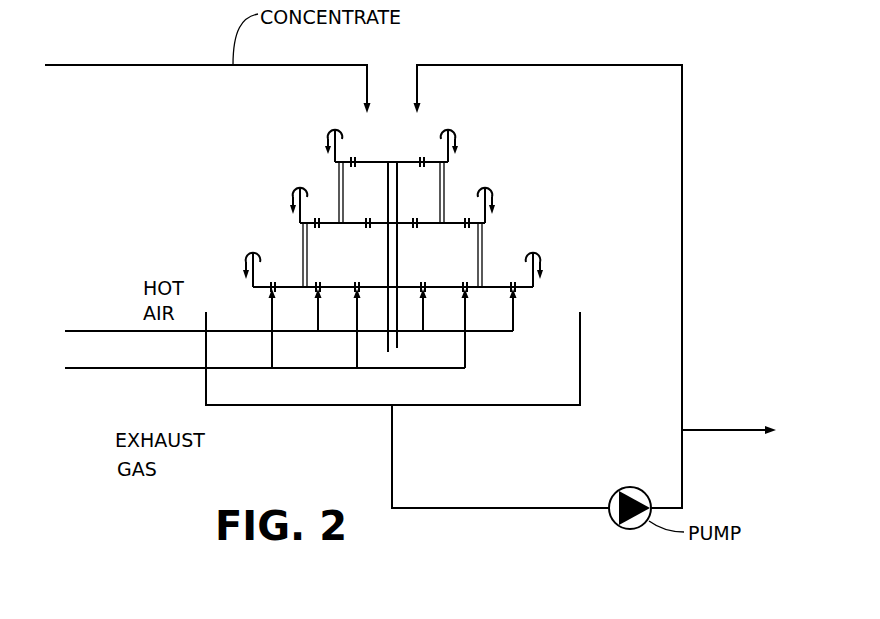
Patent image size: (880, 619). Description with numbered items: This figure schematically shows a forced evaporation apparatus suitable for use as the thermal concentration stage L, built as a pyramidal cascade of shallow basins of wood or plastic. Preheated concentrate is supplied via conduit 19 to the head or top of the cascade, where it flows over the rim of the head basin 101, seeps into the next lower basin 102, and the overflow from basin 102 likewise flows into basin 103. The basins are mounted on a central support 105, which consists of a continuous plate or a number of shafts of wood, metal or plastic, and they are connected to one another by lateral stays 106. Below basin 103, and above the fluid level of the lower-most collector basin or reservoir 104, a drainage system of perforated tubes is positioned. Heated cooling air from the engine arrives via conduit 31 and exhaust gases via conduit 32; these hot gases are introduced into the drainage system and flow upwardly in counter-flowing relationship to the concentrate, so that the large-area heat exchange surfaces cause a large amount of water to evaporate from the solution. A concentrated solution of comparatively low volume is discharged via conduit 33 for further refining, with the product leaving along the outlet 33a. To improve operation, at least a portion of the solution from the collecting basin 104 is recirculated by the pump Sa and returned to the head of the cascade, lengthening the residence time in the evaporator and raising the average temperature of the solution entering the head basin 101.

The conduit 19 is at (203, 65).
The discharge conduit 33 is at (527, 65).
The product discharge line 33a is at (729, 419).
The conduit 31 is at (130, 291).
The conduit 32 is at (138, 368).
The lower-most collector basin 104 is at (415, 410).
The central support 105 is at (405, 343).
The head basin 101 is at (455, 140).
The basin 102 is at (494, 197).
The basin 103 is at (542, 262).
The lateral stays 106 is at (338, 172).
The thermal concentration stage L is at (220, 235).
The recirculation pump Sa is at (630, 526).